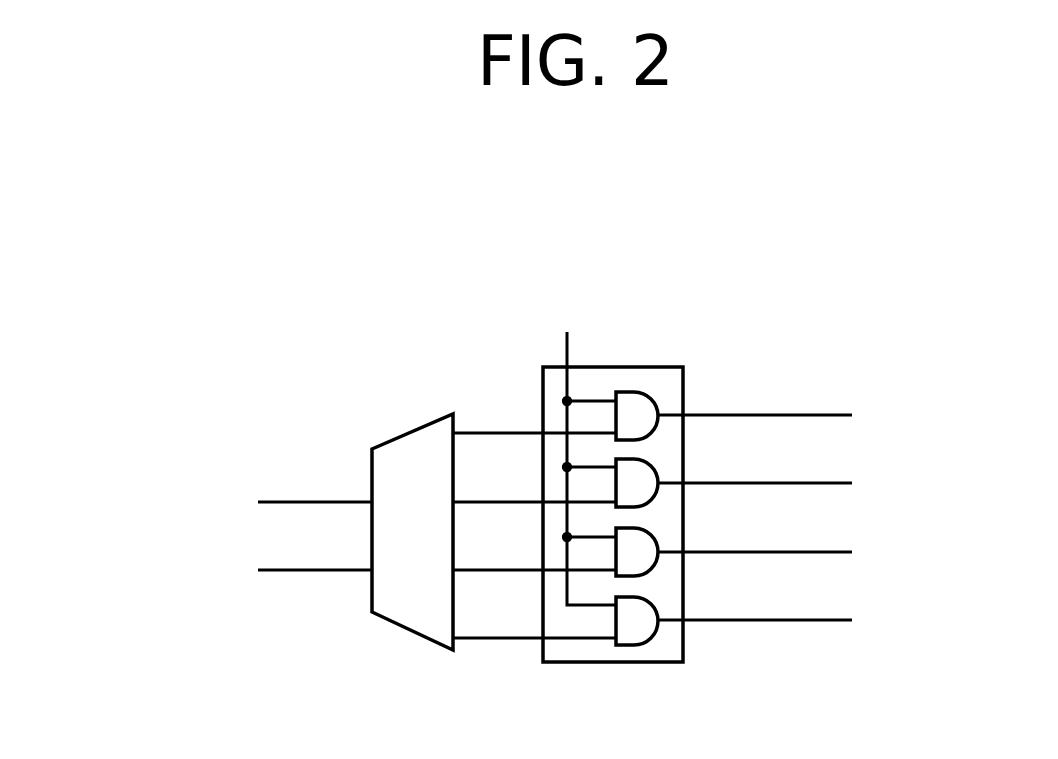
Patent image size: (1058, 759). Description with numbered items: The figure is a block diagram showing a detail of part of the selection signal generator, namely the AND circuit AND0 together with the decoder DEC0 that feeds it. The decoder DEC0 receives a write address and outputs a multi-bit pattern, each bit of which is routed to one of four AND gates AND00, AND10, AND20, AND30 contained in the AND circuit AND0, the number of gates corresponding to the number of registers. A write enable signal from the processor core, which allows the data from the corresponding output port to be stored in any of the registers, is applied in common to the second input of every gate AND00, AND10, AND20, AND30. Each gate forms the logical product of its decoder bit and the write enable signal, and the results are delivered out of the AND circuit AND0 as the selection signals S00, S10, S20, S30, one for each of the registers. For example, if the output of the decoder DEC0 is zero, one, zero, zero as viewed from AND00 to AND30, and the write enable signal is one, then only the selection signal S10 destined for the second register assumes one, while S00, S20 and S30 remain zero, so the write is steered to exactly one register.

The decoder DEC0 is at (494, 532).
The AND circuit AND0 is at (590, 662).
The AND gate AND00 is at (663, 401).
The AND gate AND10 is at (663, 468).
The AND gate AND20 is at (663, 538).
The AND gate AND30 is at (663, 607).
The selection signal S00 is at (793, 414).
The selection signal S10 is at (793, 481).
The selection signal S20 is at (793, 551).
The selection signal S30 is at (793, 618).